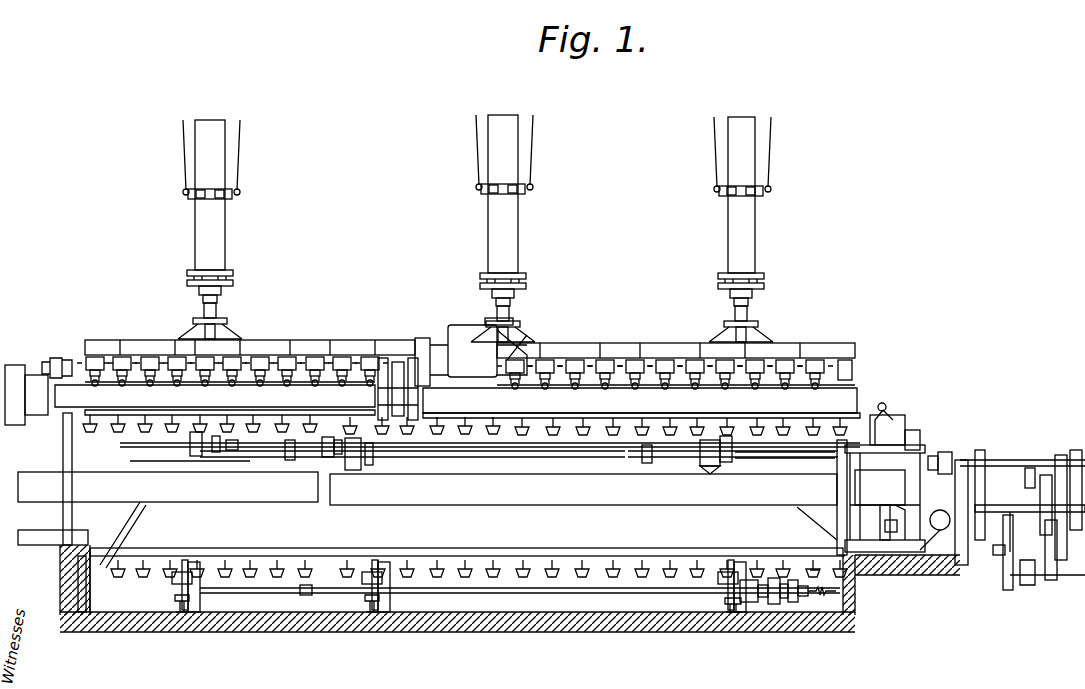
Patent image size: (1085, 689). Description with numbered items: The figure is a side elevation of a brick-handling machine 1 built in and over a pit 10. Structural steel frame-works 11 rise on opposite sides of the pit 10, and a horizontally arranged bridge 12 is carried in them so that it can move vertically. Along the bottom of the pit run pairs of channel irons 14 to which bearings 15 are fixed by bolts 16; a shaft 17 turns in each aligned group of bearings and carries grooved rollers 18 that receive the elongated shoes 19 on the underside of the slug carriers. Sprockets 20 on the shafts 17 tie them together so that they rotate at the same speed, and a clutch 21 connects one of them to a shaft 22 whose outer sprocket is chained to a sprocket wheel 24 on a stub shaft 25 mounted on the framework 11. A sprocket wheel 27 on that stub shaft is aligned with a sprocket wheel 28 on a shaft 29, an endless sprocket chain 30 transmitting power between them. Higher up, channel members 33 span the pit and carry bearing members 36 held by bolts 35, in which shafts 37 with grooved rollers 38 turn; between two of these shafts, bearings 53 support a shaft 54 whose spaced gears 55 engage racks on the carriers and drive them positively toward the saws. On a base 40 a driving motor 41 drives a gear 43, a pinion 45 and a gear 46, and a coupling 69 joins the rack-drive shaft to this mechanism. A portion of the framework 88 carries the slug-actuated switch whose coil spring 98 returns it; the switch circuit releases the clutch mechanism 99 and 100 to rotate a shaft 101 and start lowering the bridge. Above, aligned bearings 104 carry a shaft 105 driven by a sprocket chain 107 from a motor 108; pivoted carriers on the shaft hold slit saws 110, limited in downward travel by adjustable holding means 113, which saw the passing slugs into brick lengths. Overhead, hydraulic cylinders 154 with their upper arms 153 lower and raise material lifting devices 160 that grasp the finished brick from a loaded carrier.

The frame 1 is at (875, 510).
The pit 10 is at (510, 588).
The frame-works 11 is at (66, 436).
The bridge 12 is at (48, 546).
The channel irons 14 is at (175, 601).
The bearings 15 is at (185, 580).
The bolts 16 is at (172, 578).
The shaft 17 is at (252, 588).
The grooved rollers 18 is at (202, 596).
The elongated shoes 19 is at (198, 432).
The sprockets 20 is at (313, 584).
The clutch 21 is at (760, 584).
The shaft 22 is at (802, 595).
The sprocket wheel 24 is at (903, 550).
The stub shaft 25 is at (883, 529).
The sprocket wheel 27 is at (884, 514).
The sprocket wheel 28 is at (923, 441).
The shaft 29 is at (796, 454).
The endless sprocket chain 30 is at (887, 479).
The channel members 33 is at (150, 492).
The bolts 35 is at (328, 456).
The bearing members 36 is at (708, 464).
The shaft 37 is at (242, 447).
The grooved rollers 38 is at (206, 445).
The base 40 is at (993, 555).
The driving motor 41 is at (1005, 532).
The gear 43 is at (985, 460).
The pinion 45 is at (1042, 568).
The gear 46 is at (1040, 472).
The bearings 53 is at (288, 456).
The shaft 54 is at (445, 457).
The gears 55 is at (618, 462).
The coupling 69 is at (945, 462).
The framework portion 88 is at (918, 434).
The coil spring 98 is at (1032, 501).
The clutch mechanism 99 is at (1008, 559).
The clutch mechanism 100 is at (1047, 581).
The shaft 101 is at (974, 564).
The bearings 104 is at (140, 383).
The shaft 105 is at (136, 345).
The sprocket chain 107 is at (427, 338).
The motor 108 is at (466, 328).
The slit saw 110 is at (180, 383).
The adjustable holding means 113 is at (400, 358).
The tower arms 153 is at (225, 162).
The hydraulic cylinders 154 is at (200, 228).
The material lifting devices 160 is at (161, 340).